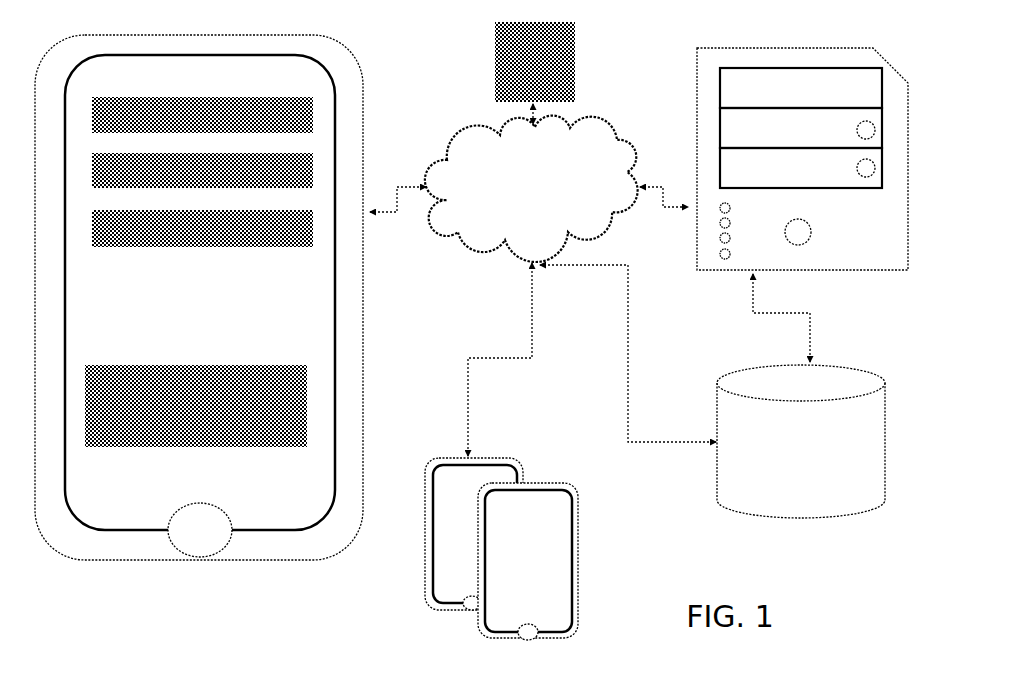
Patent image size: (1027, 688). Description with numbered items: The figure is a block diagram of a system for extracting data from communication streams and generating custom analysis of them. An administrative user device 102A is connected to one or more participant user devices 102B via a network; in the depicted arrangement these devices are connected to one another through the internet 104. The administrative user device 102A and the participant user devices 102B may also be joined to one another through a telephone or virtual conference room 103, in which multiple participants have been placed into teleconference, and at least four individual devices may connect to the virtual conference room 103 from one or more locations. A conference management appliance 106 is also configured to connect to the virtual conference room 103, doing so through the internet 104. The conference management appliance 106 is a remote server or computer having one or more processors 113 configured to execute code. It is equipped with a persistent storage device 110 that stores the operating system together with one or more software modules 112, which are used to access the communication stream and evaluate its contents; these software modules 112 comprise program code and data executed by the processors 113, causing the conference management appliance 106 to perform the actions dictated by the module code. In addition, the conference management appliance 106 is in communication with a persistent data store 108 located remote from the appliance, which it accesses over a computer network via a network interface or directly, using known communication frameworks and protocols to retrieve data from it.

The administrative user device 102A is at (199, 313).
The participant user devices 102B is at (501, 562).
The virtual conference room 103 is at (590, 239).
The internet 104 is at (531, 189).
The conference management appliance 106 is at (826, 159).
The persistent data store 108 is at (801, 458).
The persistent storage device 110 is at (801, 168).
The software modules 112 is at (801, 128).
The processors 113 is at (801, 88).